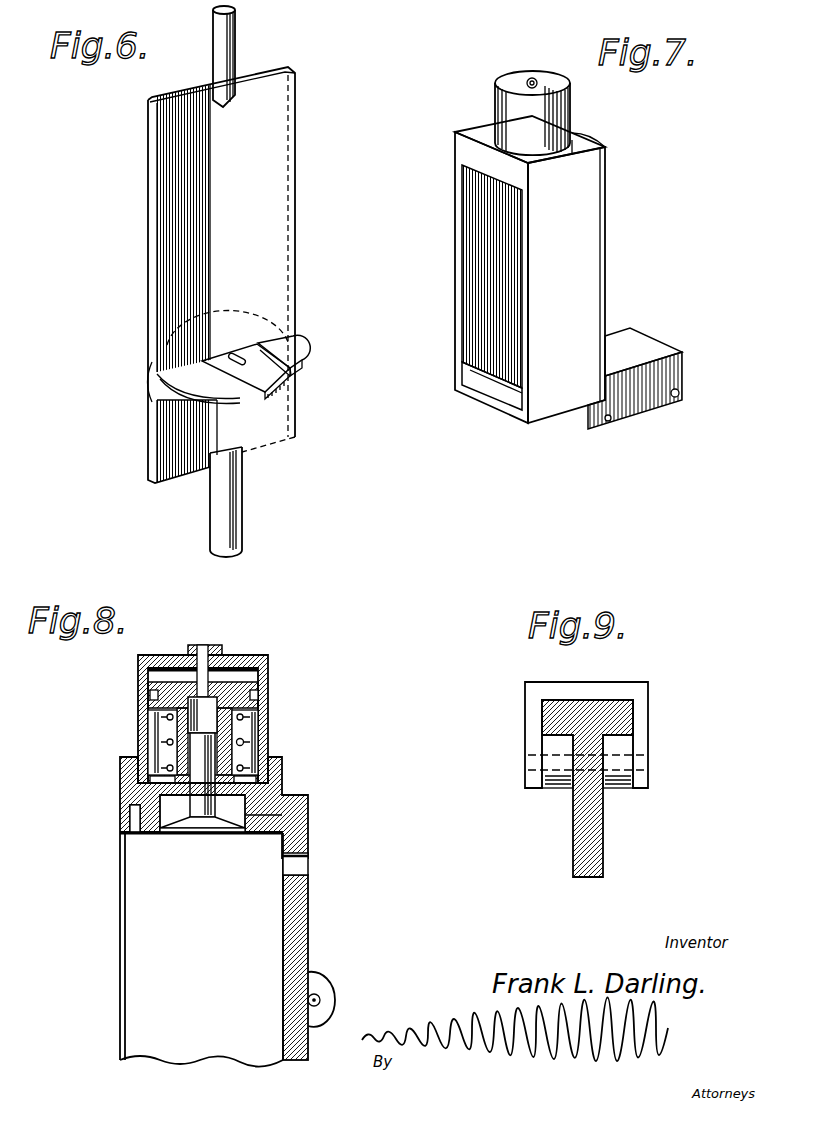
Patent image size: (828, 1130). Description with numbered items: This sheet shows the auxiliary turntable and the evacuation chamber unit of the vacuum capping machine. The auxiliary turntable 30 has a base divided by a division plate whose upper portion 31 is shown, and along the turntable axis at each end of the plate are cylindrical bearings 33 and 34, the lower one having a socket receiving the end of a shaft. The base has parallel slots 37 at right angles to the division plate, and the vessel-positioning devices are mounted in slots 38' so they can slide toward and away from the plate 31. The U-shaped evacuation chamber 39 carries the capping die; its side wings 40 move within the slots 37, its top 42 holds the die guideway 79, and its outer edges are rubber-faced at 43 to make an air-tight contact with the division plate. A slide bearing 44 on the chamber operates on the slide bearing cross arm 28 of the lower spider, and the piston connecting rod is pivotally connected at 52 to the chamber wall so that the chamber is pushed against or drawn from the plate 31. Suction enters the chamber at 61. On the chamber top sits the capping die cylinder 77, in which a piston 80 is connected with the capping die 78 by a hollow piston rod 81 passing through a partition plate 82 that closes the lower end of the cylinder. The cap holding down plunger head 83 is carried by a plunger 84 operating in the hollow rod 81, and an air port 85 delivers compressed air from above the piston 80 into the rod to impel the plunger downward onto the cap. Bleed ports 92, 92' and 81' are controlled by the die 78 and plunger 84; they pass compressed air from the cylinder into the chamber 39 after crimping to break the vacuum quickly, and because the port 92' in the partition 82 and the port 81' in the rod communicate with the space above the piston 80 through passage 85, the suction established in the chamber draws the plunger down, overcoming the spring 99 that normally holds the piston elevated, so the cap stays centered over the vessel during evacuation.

In FIG. 6, the auxiliary turntable 30 is at (272, 373).
In FIG. 6, the upper portion of division plate 31 is at (173, 234).
In FIG. 6, the cylindrical bearing 33 is at (227, 58).
In FIG. 6, the cylindrical bearing 34 is at (238, 530).
In FIG. 6, the parallel slots 37 is at (292, 357).
In FIG. 6, the slots 38' is at (230, 324).
In FIG. 7, the evacuation chamber 39 is at (600, 243).
In FIG. 8, the evacuation chamber 39 is at (292, 921).
In FIG. 7, the side wings 40 is at (545, 367).
In FIG. 7, the top 42 is at (545, 172).
In FIG. 7, the rubber facing 43 is at (457, 300).
In FIG. 8, the rubber facing 43 is at (122, 947).
In FIG. 7, the slide bearing 44 is at (684, 323).
In FIG. 9, the slide bearing 44 is at (585, 690).
In FIG. 7, the capping die cylinder 77 is at (557, 118).
In FIG. 8, the capping die cylinder 77 is at (138, 660).
In FIG. 8, the piston 80 is at (242, 682).
In FIG. 8, the air port 85 is at (205, 682).
In FIG. 8, the hollow piston rod 81 is at (267, 741).
In FIG. 8, the bleed port 81' is at (131, 742).
In FIG. 8, the spring 99 is at (244, 736).
In FIG. 8, the partition plate 82 is at (282, 776).
In FIG. 8, the capping die guideway 79 is at (260, 808).
In FIG. 8, the capping die 78 is at (258, 818).
In FIG. 8, the bleed port 92 is at (111, 837).
In FIG. 8, the bleed port 92' is at (166, 776).
In FIG. 8, the cap holding down plunger head 83 is at (187, 827).
In FIG. 8, the plunger 84 is at (215, 827).
In FIG. 8, the suction line entry 61 is at (295, 865).
In FIG. 8, the pivotal connection 52 is at (316, 998).
In FIG. 9, the slide bearing cross arm 28 is at (548, 716).